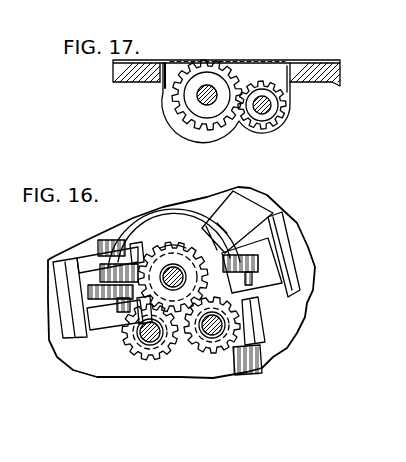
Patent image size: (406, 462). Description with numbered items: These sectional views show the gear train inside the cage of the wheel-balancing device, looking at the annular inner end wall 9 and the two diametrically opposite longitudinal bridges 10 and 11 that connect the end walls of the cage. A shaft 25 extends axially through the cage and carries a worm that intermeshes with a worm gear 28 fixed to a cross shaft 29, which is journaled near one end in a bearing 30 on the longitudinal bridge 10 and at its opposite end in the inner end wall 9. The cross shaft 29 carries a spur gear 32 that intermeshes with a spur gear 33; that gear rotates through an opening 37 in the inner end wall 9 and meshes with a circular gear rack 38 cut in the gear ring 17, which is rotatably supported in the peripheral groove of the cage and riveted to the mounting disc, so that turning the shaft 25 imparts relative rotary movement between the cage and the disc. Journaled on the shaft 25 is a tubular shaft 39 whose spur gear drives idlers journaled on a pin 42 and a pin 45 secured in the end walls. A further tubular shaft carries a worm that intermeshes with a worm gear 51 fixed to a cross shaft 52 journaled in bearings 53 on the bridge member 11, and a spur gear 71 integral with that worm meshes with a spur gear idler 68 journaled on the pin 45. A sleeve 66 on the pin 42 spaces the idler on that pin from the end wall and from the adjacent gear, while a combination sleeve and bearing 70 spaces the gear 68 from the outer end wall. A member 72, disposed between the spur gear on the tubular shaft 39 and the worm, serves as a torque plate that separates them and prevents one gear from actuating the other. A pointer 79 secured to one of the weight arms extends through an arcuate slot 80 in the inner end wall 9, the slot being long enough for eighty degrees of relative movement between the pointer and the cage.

In FIG. 17, the annular inner end wall 9 is at (137, 82).
In FIG. 16, the annular inner end wall 9 is at (303, 307).
In FIG. 16, the longitudinal bridge 10 is at (291, 266).
In FIG. 16, the longitudinal bridge 11 is at (63, 330).
In FIG. 17, the gear ring 17 is at (313, 60).
In FIG. 16, the shaft 25 is at (168, 250).
In FIG. 16, the worm gear 28 is at (262, 252).
In FIG. 17, the cross shaft 29 is at (267, 110).
In FIG. 16, the cross shaft 29 is at (267, 358).
In FIG. 16, the bearing 30 is at (259, 318).
In FIG. 17, the spur gear 32 is at (232, 130).
In FIG. 17, the spur gear 33 is at (177, 108).
In FIG. 17, the opening 37 is at (164, 63).
In FIG. 17, the circular gear rack 38 is at (267, 60).
In FIG. 16, the tubular shaft 39 is at (181, 266).
In FIG. 16, the pin 42 is at (144, 352).
In FIG. 16, the pin 45 is at (204, 336).
In FIG. 16, the worm gear 51 is at (83, 297).
In FIG. 16, the cross shaft 52 is at (78, 362).
In FIG. 16, the bearings 53 is at (88, 253).
In FIG. 16, the sleeve 66 is at (137, 348).
In FIG. 16, the spur gear idler 68 is at (226, 352).
In FIG. 16, the combination sleeve and bearing 70 is at (219, 318).
In FIG. 16, the spur gear 71 is at (172, 264).
In FIG. 16, the torque plate member 72 is at (206, 224).
In FIG. 16, the pointer 79 is at (253, 201).
In FIG. 16, the arcuate slot 80 is at (138, 229).